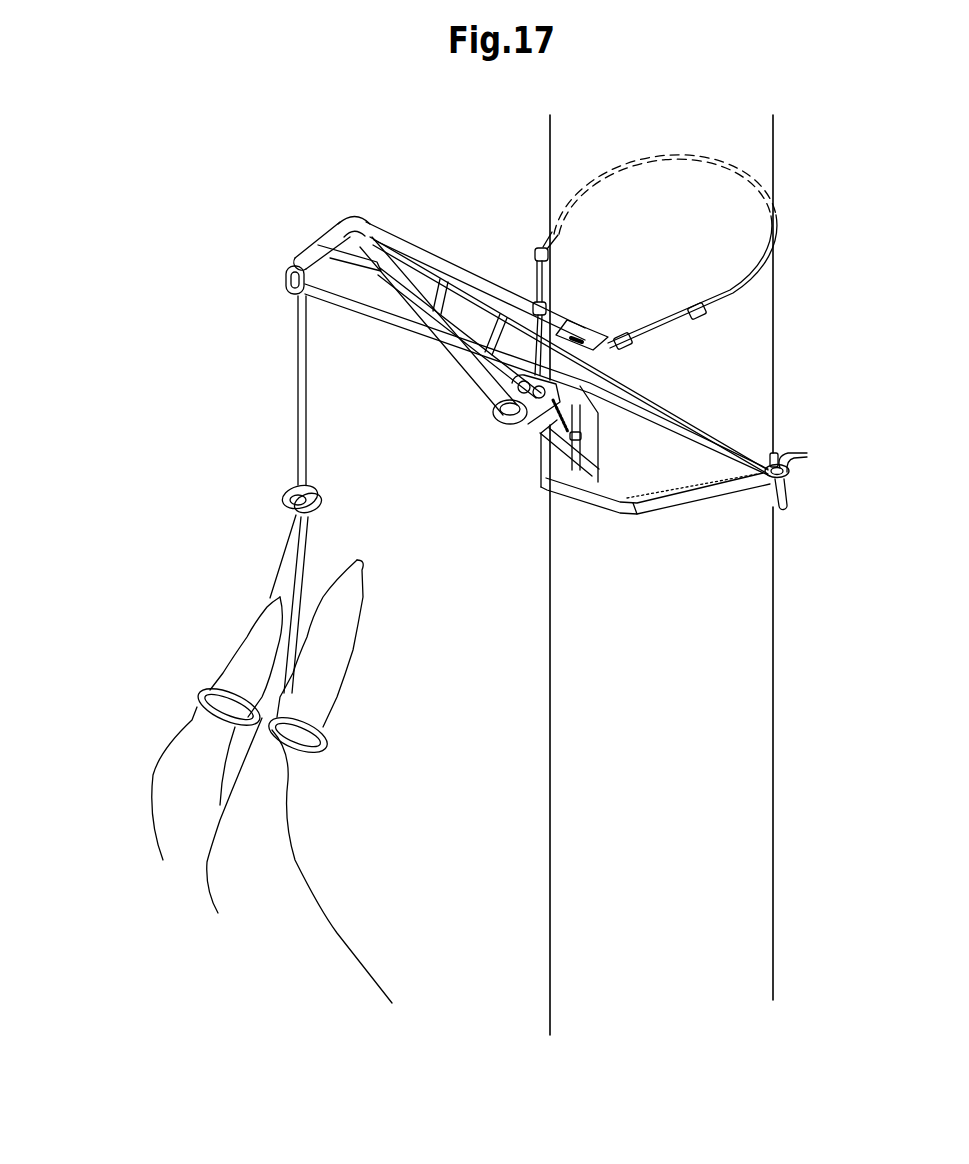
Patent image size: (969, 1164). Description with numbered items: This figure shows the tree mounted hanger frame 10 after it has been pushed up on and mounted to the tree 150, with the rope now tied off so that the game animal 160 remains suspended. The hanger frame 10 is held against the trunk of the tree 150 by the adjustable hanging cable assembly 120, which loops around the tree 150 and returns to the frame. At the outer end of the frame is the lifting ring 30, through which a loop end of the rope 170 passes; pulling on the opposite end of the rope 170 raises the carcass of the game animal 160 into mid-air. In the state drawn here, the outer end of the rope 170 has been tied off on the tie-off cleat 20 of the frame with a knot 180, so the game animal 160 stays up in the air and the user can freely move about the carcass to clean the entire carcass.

The tree hanger frame 10 is at (292, 191).
The tie-off cleat 20 is at (784, 502).
The lifting ring 30 is at (288, 285).
The adjustable hanging cable assembly 120 is at (785, 219).
The tree 150 is at (720, 765).
The game animal 160 is at (180, 757).
The rope 170 is at (710, 443).
The knot 180 is at (790, 473).